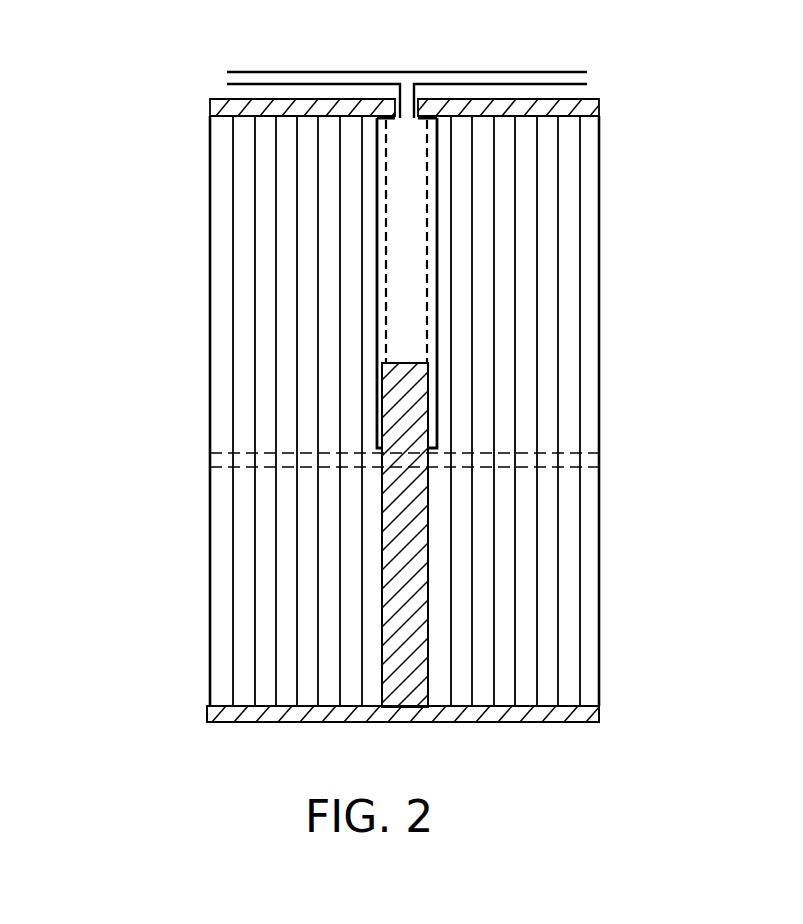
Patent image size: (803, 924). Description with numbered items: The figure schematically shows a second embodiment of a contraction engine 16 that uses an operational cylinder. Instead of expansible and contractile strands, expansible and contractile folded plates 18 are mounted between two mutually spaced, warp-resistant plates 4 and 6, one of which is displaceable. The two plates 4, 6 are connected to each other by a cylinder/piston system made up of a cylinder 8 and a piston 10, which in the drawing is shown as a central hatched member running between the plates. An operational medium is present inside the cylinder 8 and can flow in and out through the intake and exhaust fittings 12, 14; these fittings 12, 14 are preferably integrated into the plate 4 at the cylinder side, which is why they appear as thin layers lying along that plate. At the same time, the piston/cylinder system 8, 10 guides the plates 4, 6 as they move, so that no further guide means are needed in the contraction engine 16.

The warp-resistant plate 4 is at (600, 108).
The warp-resistant plate 6 is at (592, 712).
The cylinder 8 is at (432, 297).
The piston 10 is at (418, 538).
The intake fitting 12 is at (557, 72).
The exhaust fitting 14 is at (270, 70).
The contraction engine 16 is at (127, 281).
The folded plates 18 is at (558, 410).